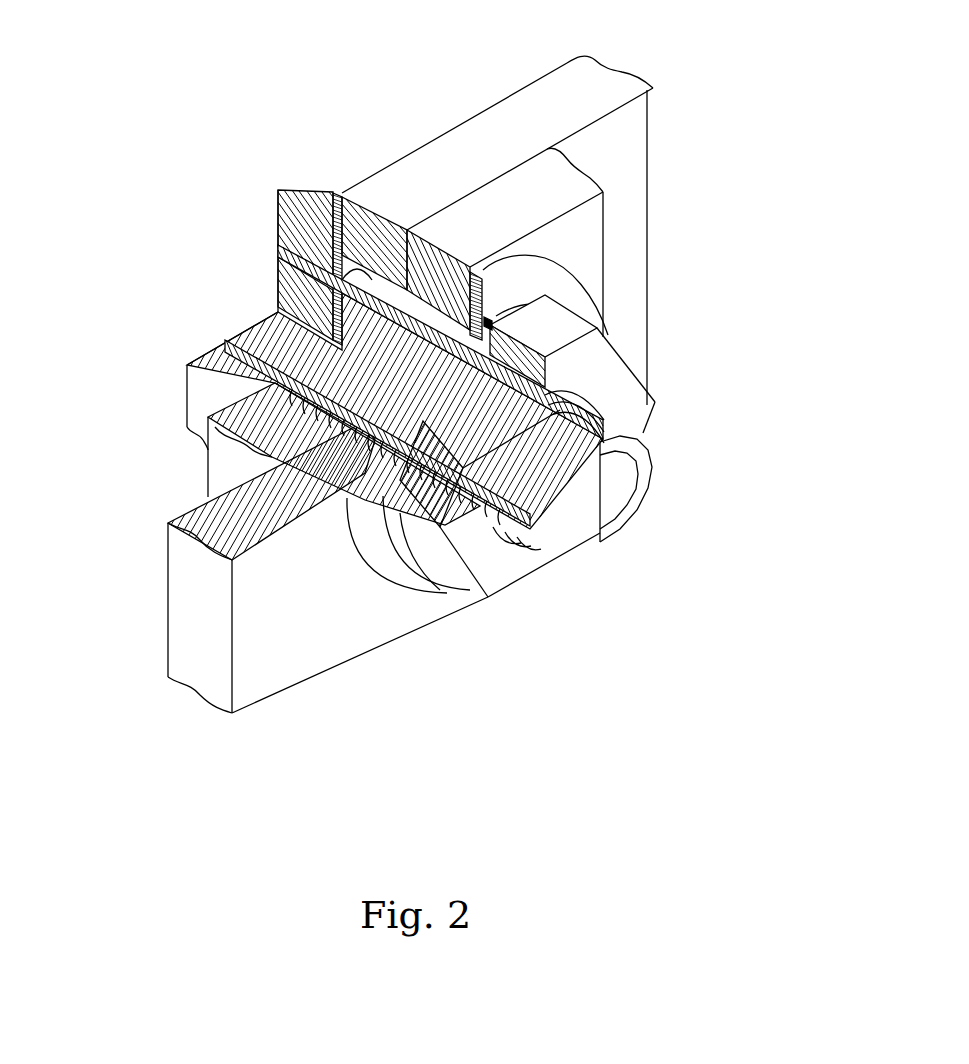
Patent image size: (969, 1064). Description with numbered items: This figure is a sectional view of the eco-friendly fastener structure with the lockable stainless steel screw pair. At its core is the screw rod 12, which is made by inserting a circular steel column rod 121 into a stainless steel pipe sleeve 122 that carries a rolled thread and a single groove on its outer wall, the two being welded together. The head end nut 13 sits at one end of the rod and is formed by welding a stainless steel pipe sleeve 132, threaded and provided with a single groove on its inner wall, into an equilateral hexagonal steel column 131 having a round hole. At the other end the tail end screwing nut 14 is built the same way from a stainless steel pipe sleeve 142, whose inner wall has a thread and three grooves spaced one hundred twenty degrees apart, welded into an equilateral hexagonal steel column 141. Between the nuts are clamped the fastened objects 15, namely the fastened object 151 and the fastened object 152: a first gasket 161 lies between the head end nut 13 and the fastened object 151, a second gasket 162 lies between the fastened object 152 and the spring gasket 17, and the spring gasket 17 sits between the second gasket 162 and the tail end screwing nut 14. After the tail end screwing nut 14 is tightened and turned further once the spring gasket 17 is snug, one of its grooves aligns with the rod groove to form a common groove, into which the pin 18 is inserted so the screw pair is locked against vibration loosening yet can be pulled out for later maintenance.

The screw rod 12 is at (725, 502).
The circular steel column rod 121 is at (613, 487).
The stainless steel pipe sleeve 122 is at (593, 547).
The head end nut 13 is at (178, 118).
The equilateral hexagonal steel column 131 is at (307, 197).
The stainless steel pipe sleeve 132 is at (233, 332).
The tail end screwing nut 14 is at (630, 590).
The equilateral hexagonal steel column 141 is at (497, 568).
The stainless steel pipe sleeve 142 is at (500, 547).
The housing 15 is at (497, 230).
The fastened object 151 is at (487, 136).
The fastened object 152 is at (578, 218).
The gasket 161 is at (340, 192).
The gasket 162 is at (523, 270).
The spring gasket 17 is at (505, 316).
The pin 18 is at (603, 440).